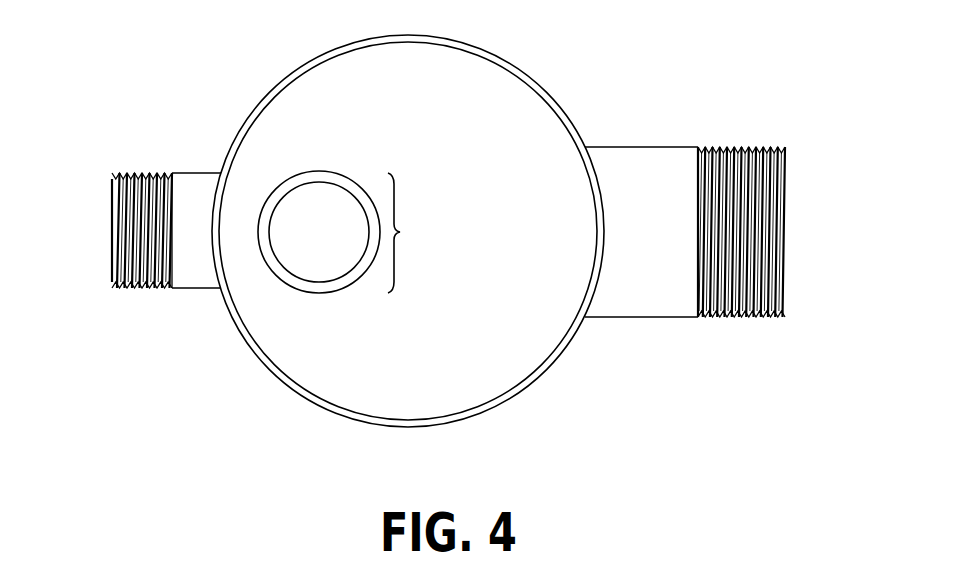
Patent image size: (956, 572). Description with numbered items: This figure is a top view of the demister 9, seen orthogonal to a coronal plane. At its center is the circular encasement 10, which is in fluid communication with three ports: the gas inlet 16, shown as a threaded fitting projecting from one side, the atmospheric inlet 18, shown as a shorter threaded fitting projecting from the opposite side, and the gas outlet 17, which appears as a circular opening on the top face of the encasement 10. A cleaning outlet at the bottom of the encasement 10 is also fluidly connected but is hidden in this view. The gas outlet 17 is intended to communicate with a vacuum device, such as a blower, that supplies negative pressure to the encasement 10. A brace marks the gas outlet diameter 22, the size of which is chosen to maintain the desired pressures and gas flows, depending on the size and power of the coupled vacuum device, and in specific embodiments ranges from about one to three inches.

The demister 9 is at (220, 64).
The encasement 10 is at (473, 43).
The gas inlet 16 is at (786, 226).
The gas outlet 17 is at (297, 248).
The atmospheric inlet 18 is at (112, 231).
The gas outlet diameter 22 is at (400, 232).